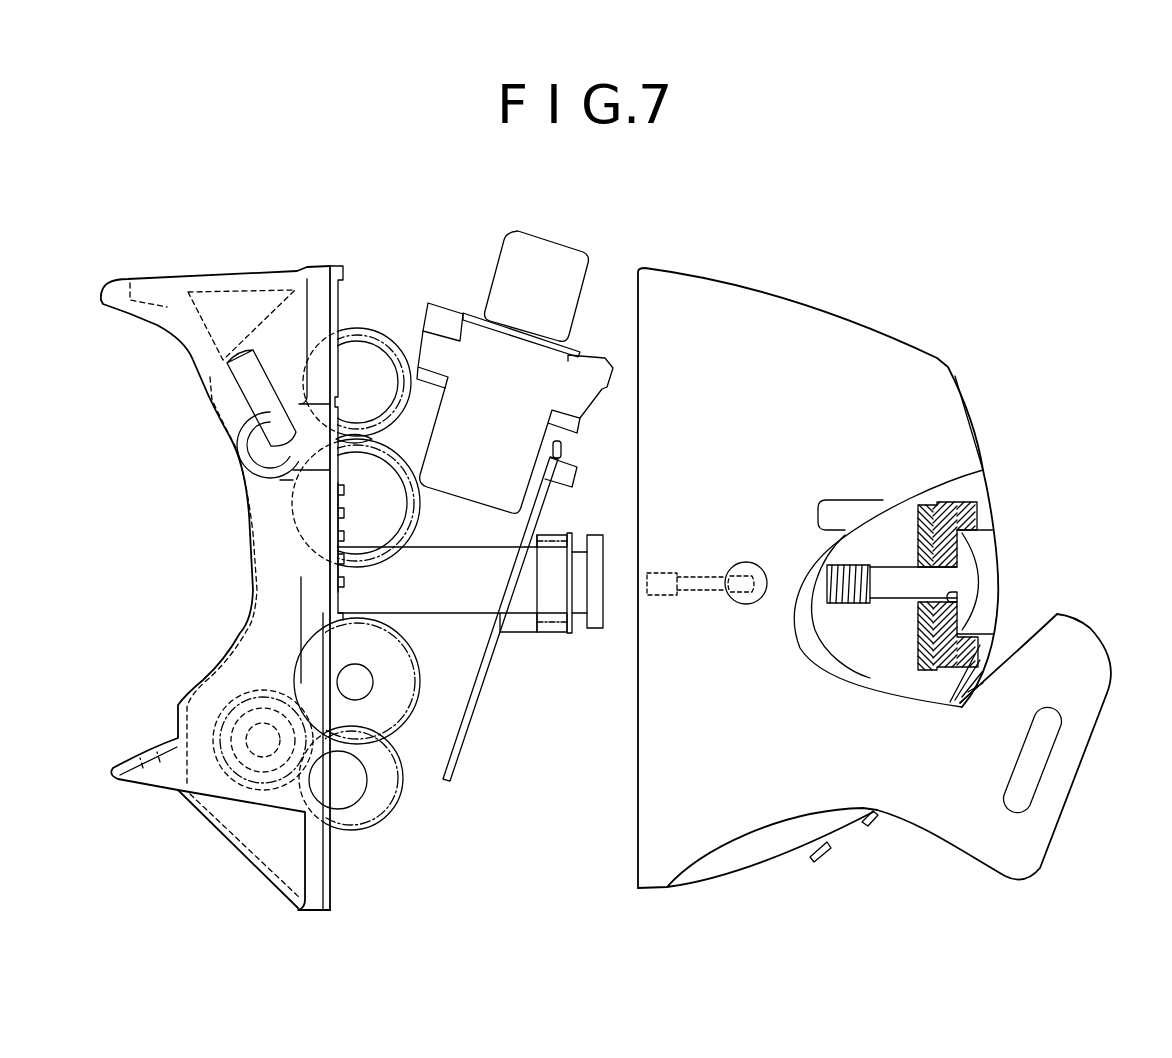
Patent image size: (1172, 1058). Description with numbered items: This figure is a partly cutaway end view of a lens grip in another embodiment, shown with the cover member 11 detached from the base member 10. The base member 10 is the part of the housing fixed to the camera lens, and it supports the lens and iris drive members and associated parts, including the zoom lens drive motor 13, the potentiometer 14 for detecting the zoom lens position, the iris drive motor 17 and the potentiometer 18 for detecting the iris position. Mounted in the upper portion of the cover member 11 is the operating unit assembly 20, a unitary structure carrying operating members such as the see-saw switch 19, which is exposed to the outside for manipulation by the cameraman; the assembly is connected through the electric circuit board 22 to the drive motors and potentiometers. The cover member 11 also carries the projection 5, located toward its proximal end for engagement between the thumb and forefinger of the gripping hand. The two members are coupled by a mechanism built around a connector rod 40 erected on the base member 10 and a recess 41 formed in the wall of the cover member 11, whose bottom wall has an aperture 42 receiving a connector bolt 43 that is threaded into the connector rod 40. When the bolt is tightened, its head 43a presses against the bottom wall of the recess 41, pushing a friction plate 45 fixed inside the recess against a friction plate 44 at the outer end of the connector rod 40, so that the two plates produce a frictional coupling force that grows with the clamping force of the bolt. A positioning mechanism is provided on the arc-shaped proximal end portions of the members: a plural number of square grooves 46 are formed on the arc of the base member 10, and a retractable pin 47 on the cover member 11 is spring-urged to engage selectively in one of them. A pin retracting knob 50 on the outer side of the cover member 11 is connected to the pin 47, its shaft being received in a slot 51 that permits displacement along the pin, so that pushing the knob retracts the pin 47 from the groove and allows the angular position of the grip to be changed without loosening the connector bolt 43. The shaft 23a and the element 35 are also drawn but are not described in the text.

The projection 5 is at (1050, 823).
The base member 10 is at (216, 833).
The cover member 11 is at (750, 872).
The zoom lens drive motor 13 is at (435, 640).
The potentiometer 14 is at (360, 835).
The iris drive motor 17 is at (373, 328).
The potentiometer 18 is at (420, 512).
The see-saw switch 19 is at (507, 260).
The operating unit assembly 20 is at (549, 233).
The electric circuit board 22 is at (455, 765).
The shaft 23a is at (507, 605).
The bearing 35 is at (560, 537).
The connector rod 40 is at (580, 612).
The recess 41 is at (965, 537).
The aperture 42 is at (950, 596).
The connector bolt 43 is at (887, 575).
The head 43a is at (975, 583).
The friction plate 44 is at (592, 630).
The friction plate 45 is at (970, 500).
The square grooves 46 is at (332, 572).
The retractable pin 47 is at (687, 597).
The pin retracting knob 50 is at (748, 561).
The slot 51 is at (739, 598).